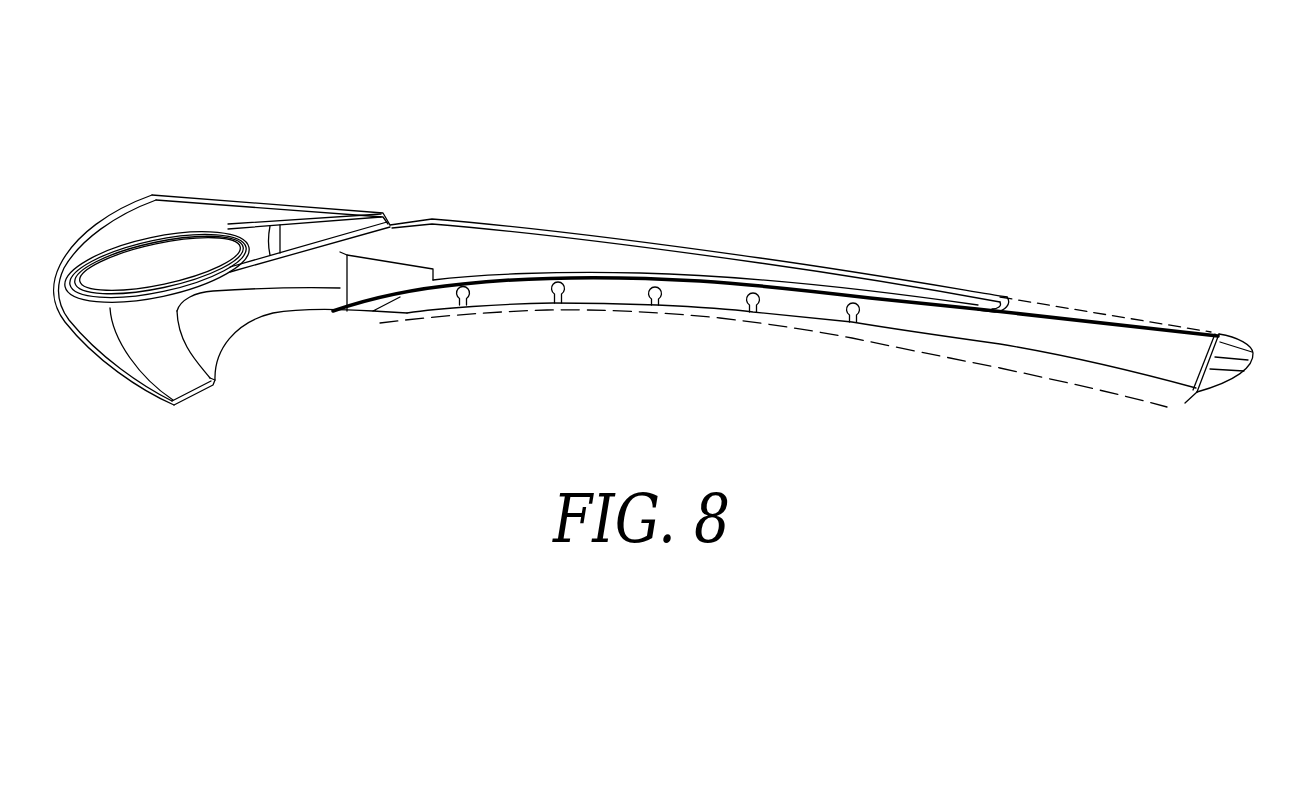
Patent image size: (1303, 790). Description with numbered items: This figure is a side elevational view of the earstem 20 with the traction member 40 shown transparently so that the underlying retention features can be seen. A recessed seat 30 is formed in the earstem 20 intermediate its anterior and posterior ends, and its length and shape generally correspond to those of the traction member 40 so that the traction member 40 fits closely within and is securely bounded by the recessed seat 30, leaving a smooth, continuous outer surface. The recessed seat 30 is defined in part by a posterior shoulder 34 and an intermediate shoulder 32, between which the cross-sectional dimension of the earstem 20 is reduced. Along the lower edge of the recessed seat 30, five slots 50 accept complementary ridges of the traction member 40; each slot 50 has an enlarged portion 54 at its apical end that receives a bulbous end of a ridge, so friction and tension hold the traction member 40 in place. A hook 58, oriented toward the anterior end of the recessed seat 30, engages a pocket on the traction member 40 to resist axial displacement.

The earstem 20 is at (670, 262).
The recessed seat 30 is at (1137, 355).
The intermediate shoulder 32 is at (978, 310).
The posterior shoulder 34 is at (1240, 337).
The traction member 40 is at (978, 362).
The slots 50 is at (755, 312).
The enlarged portion 54 is at (856, 300).
The hook 58 is at (373, 316).